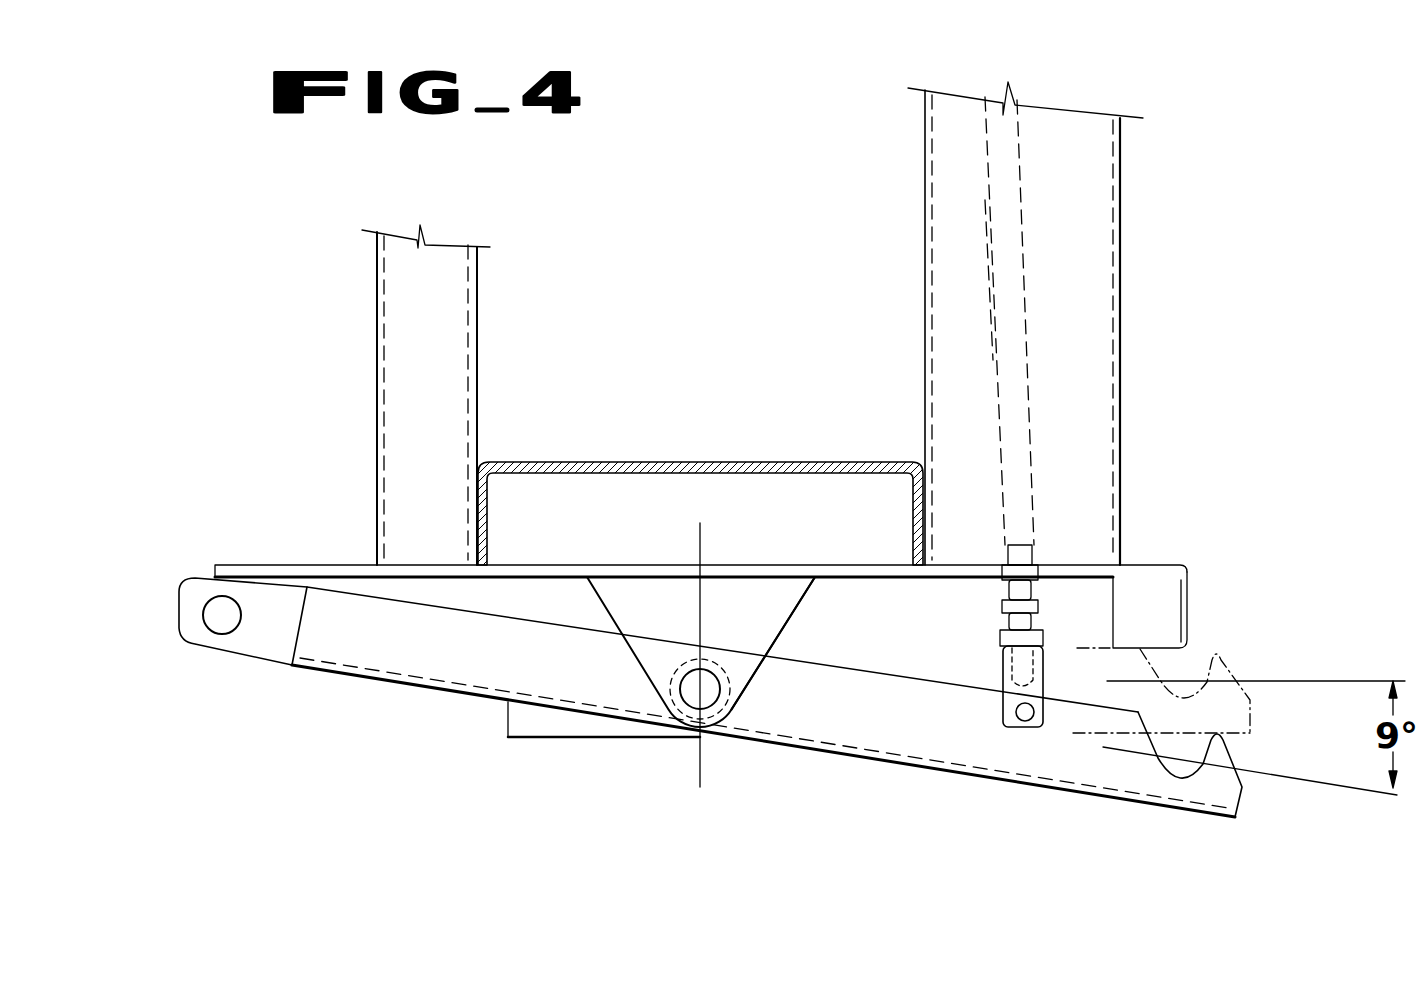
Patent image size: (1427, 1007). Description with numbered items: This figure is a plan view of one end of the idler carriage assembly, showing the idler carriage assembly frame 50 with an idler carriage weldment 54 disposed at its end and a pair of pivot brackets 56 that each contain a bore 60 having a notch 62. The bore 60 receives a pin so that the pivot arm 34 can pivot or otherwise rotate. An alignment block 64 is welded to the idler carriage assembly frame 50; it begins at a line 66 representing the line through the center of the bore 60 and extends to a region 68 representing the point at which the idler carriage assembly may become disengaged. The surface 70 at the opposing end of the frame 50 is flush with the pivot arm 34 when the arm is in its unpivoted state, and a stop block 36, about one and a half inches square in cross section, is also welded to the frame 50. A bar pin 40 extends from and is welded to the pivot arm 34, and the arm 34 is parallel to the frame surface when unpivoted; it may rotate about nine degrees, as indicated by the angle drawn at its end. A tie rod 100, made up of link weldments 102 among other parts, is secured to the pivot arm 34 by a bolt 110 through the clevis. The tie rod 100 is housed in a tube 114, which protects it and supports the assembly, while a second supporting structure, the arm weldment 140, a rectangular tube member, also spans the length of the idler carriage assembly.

The pivot arm 34 is at (1130, 805).
The stop block 36 is at (1174, 633).
The bar pin 40 is at (190, 598).
The idler carriage assembly frame 50 is at (283, 564).
The idler carriage weldment 54 is at (672, 462).
The pivot brackets 56 is at (765, 626).
The bore 60 is at (696, 680).
The notch 62 is at (700, 660).
The alignment block 64 is at (573, 620).
The line 66 is at (702, 777).
The region 68 is at (503, 722).
The surface 70 is at (587, 740).
The tie rod 100 is at (1028, 140).
The link weldment 102 is at (995, 365).
The bolt 110 is at (1008, 715).
The tube 114 is at (925, 183).
The arm weldment 140 is at (397, 353).